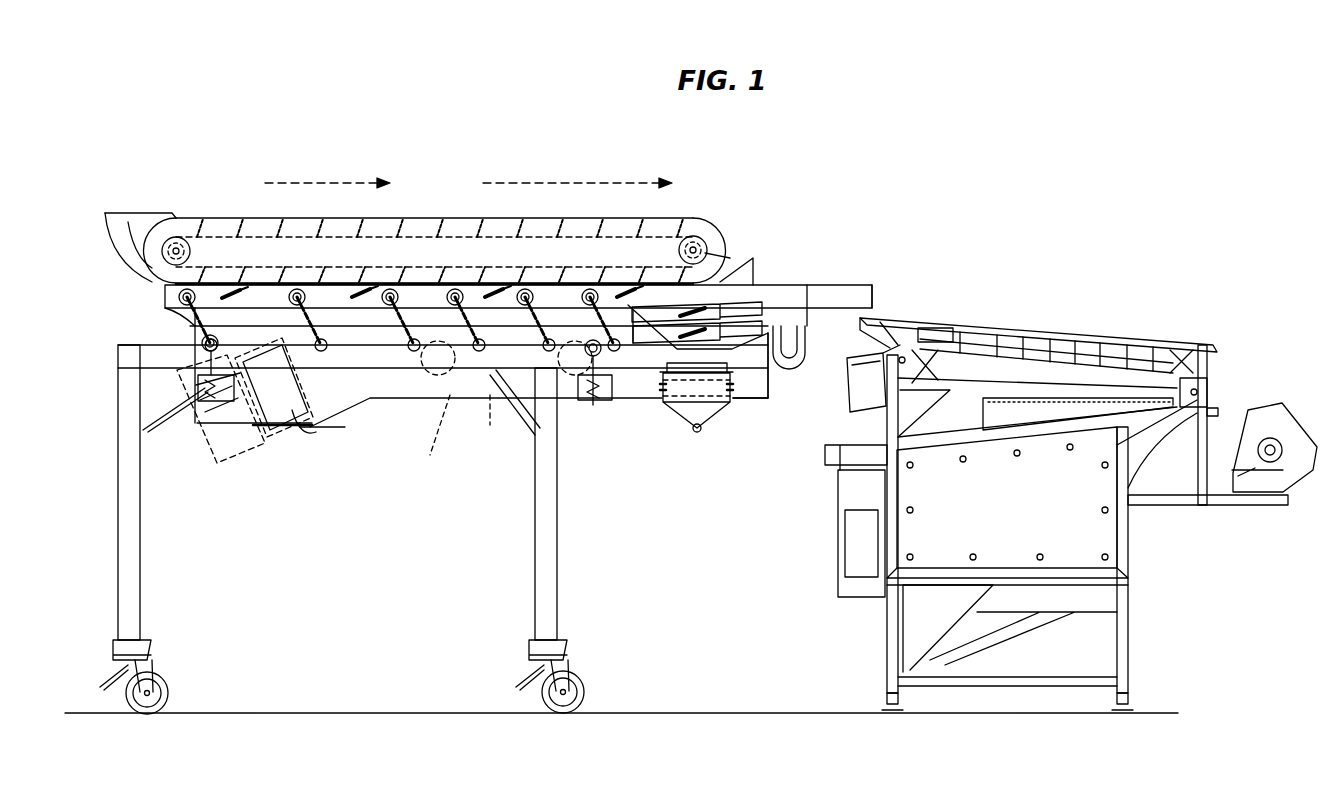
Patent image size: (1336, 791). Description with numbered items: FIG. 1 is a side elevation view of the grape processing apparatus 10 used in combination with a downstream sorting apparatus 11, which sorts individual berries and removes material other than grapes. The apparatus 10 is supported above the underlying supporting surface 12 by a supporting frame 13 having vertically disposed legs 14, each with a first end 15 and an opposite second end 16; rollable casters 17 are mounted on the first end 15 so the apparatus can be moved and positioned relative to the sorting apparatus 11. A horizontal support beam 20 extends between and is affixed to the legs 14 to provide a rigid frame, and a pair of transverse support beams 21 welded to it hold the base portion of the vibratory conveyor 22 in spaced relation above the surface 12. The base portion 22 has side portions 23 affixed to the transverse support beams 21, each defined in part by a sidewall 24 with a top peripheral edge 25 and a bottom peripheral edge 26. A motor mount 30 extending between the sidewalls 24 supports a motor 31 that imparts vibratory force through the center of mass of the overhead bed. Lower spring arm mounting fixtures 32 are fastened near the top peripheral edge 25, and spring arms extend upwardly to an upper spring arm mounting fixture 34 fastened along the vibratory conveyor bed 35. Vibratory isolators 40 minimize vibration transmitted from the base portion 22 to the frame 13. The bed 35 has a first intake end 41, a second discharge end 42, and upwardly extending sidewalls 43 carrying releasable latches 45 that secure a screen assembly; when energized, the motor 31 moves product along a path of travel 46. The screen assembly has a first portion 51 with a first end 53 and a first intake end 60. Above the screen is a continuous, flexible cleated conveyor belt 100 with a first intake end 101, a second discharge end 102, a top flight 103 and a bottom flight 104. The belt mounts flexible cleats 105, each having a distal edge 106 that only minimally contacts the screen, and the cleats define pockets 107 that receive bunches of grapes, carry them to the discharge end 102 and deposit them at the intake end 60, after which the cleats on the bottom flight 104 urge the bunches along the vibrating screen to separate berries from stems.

The grape processing apparatus 10 is at (446, 126).
The sorting apparatus 11 is at (1072, 298).
The underlying supporting surface 12 is at (302, 713).
The supporting frame 13 is at (407, 511).
The vertically disposed legs 14 is at (140, 535).
The first end 15 is at (140, 630).
The second end 16 is at (130, 380).
The rollable casters 17 is at (168, 690).
The horizontal support beam 20 is at (140, 344).
The transverse support beams 21 is at (452, 433).
The base portion of the vibratory conveyor 22 is at (345, 430).
The side portions 23 is at (352, 399).
The sidewall 24 is at (395, 388).
The top peripheral edge 25 is at (238, 330).
The bottom peripheral edge 26 is at (305, 425).
The motor mount 30 is at (290, 432).
The motor 31 is at (232, 455).
The lower spring arm mounting fixtures 32 is at (415, 345).
The upper spring arm mounting fixture 34 is at (165, 310).
The vibratory conveyor bed 35 is at (492, 278).
The vibratory isolators 40 is at (165, 395).
The first intake end 41 is at (165, 297).
The second discharge end 42 is at (874, 296).
The sidewalls 43 is at (838, 298).
The releasable latches 45 is at (366, 322).
The path of travel 46 is at (268, 183).
The first portion of the screen assembly 51 is at (129, 201).
The first end of the screen 53 is at (132, 222).
The first intake end of the first portion 60 is at (105, 215).
The cleated conveyor belt 100 is at (471, 197).
The first intake end 101 is at (700, 245).
The second discharge end 102 is at (180, 236).
The top flight 103 is at (383, 236).
The bottom flight 104 is at (418, 270).
The flexible cleats 105 is at (683, 220).
The distal edge 106 is at (600, 225).
The pockets 107 is at (330, 232).